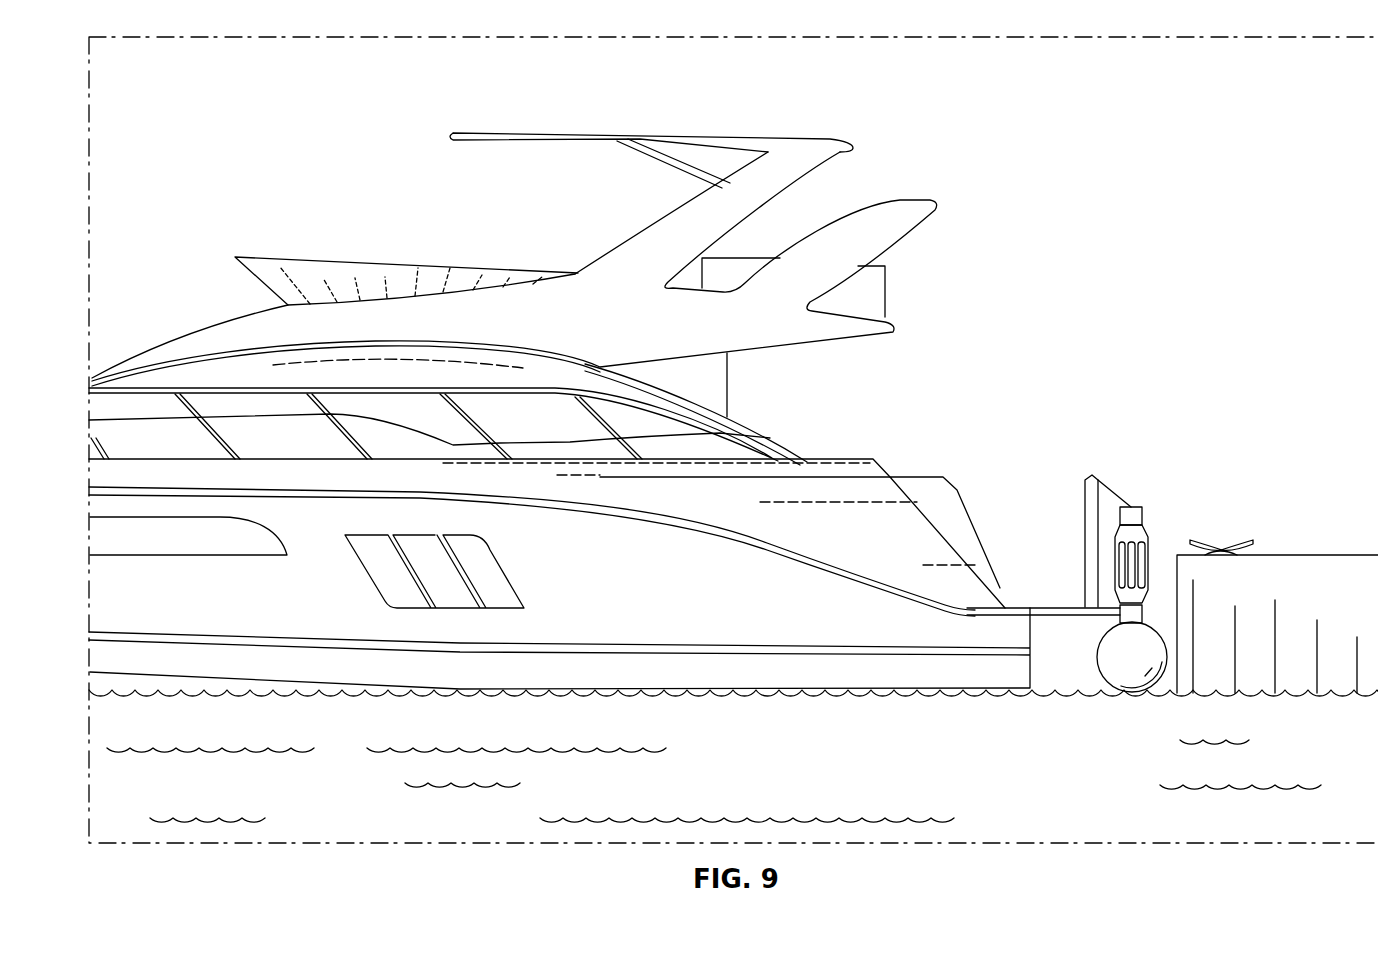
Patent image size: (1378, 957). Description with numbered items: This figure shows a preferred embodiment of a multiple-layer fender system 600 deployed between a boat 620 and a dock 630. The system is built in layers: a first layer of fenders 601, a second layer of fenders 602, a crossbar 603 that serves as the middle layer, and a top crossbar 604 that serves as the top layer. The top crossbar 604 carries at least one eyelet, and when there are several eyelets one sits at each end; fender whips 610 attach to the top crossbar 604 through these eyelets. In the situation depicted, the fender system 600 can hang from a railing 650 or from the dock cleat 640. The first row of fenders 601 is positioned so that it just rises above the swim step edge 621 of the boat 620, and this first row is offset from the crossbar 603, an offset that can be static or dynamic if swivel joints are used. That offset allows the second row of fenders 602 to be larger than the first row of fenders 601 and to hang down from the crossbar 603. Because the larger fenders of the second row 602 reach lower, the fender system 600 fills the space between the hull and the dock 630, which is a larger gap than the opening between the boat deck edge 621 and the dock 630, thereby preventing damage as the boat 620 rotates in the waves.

The multiple-layer fender system 600 is at (1128, 551).
The first layer of fenders 601 is at (1141, 535).
The second layer of fenders 602 is at (1120, 652).
The crossbar 603 is at (1142, 614).
The top crossbar 604 is at (1131, 506).
The fender whips 610 is at (1122, 505).
The boat 620 is at (850, 450).
The swim step edge 621 is at (1070, 618).
The dock 630 is at (1313, 555).
The dock cleat 640 is at (1222, 548).
The railing 650 is at (1090, 515).